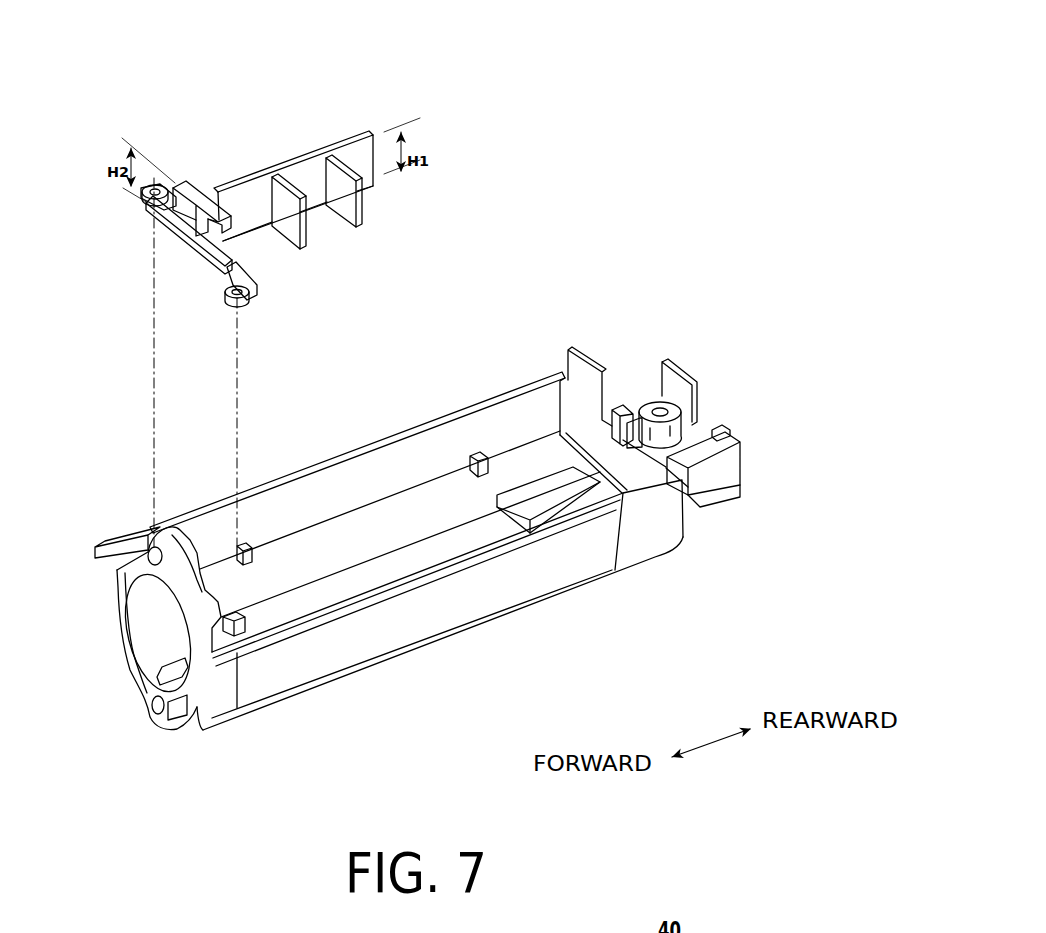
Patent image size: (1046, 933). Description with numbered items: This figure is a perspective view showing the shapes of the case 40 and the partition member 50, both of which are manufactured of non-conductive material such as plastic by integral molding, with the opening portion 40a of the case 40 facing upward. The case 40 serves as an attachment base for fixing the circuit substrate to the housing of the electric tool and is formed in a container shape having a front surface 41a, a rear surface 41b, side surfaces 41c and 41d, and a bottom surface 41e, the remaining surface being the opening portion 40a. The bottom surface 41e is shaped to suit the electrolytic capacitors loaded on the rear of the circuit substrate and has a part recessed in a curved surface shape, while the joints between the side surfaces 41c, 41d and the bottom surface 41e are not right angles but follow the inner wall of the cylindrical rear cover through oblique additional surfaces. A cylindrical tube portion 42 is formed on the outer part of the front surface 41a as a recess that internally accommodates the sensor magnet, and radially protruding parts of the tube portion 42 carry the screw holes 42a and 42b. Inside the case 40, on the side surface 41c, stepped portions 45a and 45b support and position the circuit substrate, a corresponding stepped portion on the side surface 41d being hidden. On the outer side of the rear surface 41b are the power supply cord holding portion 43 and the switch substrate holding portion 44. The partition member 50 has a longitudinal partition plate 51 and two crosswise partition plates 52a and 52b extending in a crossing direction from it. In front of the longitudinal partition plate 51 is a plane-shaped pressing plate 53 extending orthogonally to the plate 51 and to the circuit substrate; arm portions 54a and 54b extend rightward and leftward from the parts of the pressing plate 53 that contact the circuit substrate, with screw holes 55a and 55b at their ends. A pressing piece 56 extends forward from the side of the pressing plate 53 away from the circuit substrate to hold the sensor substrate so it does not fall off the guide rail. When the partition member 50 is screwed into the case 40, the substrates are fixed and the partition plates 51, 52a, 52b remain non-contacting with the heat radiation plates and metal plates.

The case 40 is at (583, 336).
The opening portion 40a is at (422, 412).
The front surface 41a is at (175, 622).
The rear surface 41b is at (611, 472).
The side surface 41c is at (350, 484).
The side surface 41d is at (421, 608).
The bottom surface 41e is at (370, 575).
The tube portion 42 is at (120, 575).
The screw hole 42a is at (152, 547).
The screw hole 42b is at (154, 714).
The power supply cord holding portion 43 is at (712, 468).
The switch substrate holding portion 44 is at (678, 391).
The stepped portion 45a is at (248, 543).
The stepped portion 45b is at (478, 454).
The partition member 50 is at (376, 118).
The longitudinal partition plate 51 is at (246, 195).
The crosswise partition plate 52a is at (293, 247).
The crosswise partition plate 52b is at (348, 228).
The pressing plate 53 is at (200, 242).
The arm portion 54a is at (163, 217).
The arm portion 54b is at (230, 278).
The screw hole 55a is at (146, 202).
The screw hole 55b is at (246, 302).
The pressing piece 56 is at (191, 190).